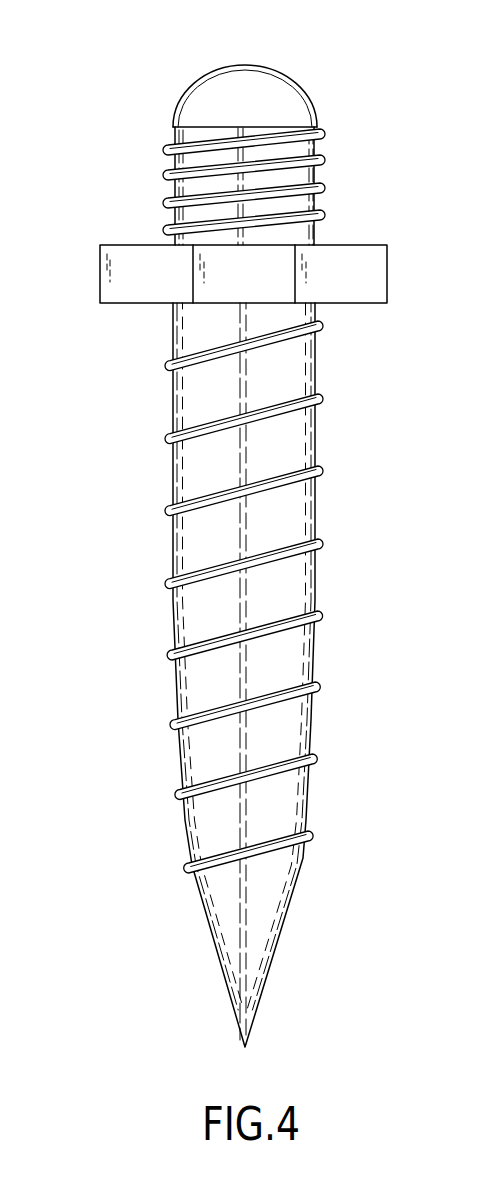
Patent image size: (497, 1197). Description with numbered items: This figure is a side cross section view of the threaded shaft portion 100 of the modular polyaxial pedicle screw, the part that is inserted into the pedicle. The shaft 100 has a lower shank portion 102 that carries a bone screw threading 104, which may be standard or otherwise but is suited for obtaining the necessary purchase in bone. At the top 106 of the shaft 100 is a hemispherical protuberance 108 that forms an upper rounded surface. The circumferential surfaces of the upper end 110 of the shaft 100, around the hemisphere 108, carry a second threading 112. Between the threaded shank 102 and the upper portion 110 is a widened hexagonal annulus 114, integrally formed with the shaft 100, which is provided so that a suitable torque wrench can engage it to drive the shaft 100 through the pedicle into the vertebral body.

The threaded shaft portion 100 is at (236, 528).
The lower shank portion 102 is at (302, 675).
The bone screw threading 104 is at (318, 462).
The top of the shaft 106 is at (229, 127).
The hemispherical protuberance 108 is at (252, 83).
The upper end of the shaft 110 is at (229, 171).
The second threading 112 is at (317, 162).
The widened hexagonal annulus 114 is at (118, 280).